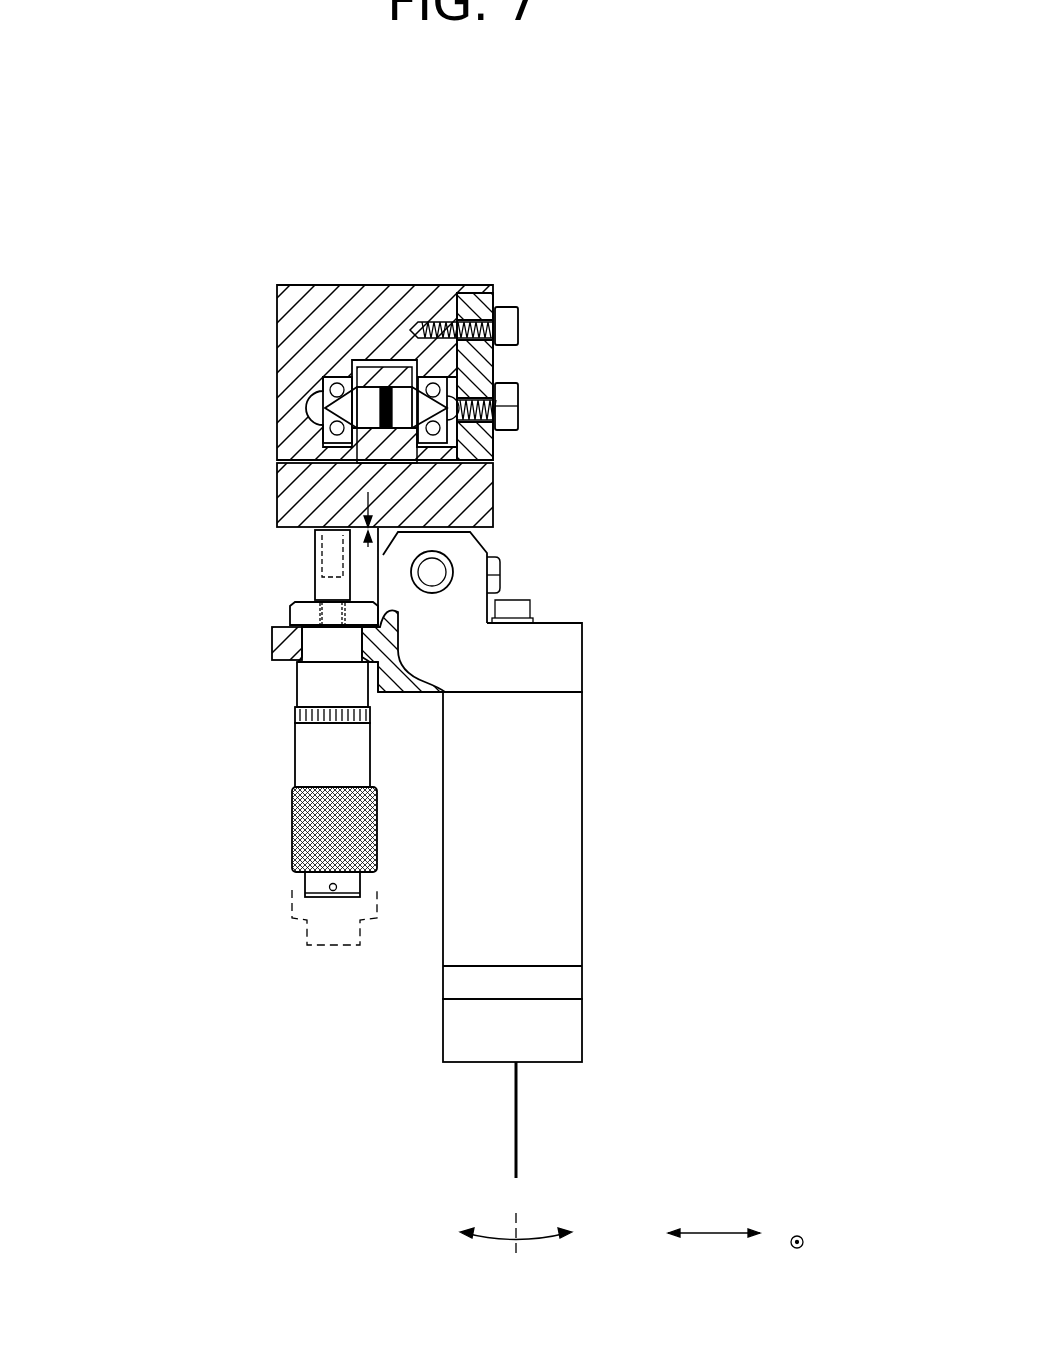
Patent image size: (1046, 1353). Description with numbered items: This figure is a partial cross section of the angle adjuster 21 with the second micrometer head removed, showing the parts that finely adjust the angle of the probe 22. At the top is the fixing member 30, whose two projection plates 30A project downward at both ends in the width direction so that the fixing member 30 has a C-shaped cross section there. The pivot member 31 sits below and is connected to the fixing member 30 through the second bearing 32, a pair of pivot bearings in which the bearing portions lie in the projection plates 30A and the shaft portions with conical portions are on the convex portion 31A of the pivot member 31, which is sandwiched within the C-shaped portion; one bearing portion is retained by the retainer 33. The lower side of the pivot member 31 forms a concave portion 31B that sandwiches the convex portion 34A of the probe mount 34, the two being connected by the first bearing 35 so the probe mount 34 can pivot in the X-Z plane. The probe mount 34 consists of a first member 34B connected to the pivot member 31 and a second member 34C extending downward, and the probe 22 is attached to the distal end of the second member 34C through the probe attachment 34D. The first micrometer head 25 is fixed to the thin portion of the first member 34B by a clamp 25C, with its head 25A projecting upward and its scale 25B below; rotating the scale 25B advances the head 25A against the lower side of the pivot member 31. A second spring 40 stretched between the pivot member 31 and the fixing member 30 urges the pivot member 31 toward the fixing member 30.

The angle adjuster 21 is at (648, 286).
The probe 22 is at (516, 1125).
The first micrometer head 25 is at (145, 598).
The head 25A is at (310, 570).
The scale 25B is at (318, 748).
The clamp 25C is at (280, 615).
The fixing member 30 is at (278, 305).
The projection plate 30A is at (440, 355).
The pivot member 31 is at (607, 432).
The convex portion 31A is at (465, 445).
The concave portion 31B is at (478, 537).
The second bearing 32 is at (373, 380).
The retainer 33 is at (495, 292).
The probe mount 34 is at (695, 580).
The convex portion 34A is at (450, 607).
The first member 34B is at (562, 650).
The second member 34C is at (547, 747).
The probe attachment 34D is at (570, 1030).
The first bearing 35 is at (490, 560).
The second spring 40 is at (315, 548).